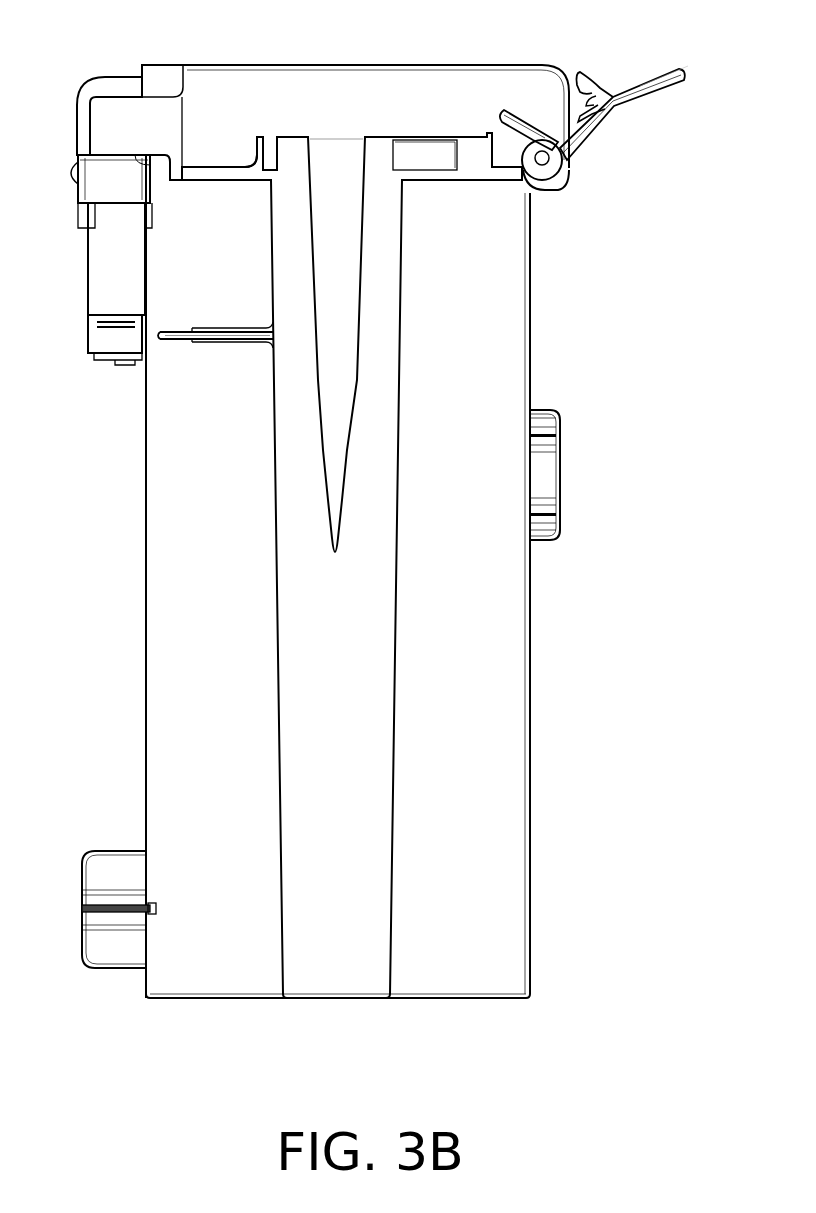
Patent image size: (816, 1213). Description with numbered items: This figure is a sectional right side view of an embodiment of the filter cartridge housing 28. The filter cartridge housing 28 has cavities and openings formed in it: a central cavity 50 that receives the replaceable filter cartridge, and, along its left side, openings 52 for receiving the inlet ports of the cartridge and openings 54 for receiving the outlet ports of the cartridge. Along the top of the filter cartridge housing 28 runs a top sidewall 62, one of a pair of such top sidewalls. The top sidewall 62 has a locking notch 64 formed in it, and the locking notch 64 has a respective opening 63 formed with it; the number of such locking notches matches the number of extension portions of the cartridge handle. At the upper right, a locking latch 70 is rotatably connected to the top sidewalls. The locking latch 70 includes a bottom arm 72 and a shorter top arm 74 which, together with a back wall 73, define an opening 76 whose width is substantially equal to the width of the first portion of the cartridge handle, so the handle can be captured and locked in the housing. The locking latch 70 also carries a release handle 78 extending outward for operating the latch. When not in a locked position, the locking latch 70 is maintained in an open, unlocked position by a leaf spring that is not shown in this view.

The filter cartridge housing 28 is at (558, 356).
The cavity 50 is at (357, 102).
The openings 52 is at (100, 341).
The openings 54 is at (100, 273).
The top sidewall 62 is at (415, 65).
The opening 63 is at (247, 167).
The locking notch 64 is at (102, 118).
The locking latch 70 is at (666, 65).
The bottom arm 72 is at (517, 128).
The back wall 73 is at (577, 114).
The top arm 74 is at (595, 82).
The opening 76 is at (584, 99).
The release handle 78 is at (675, 80).